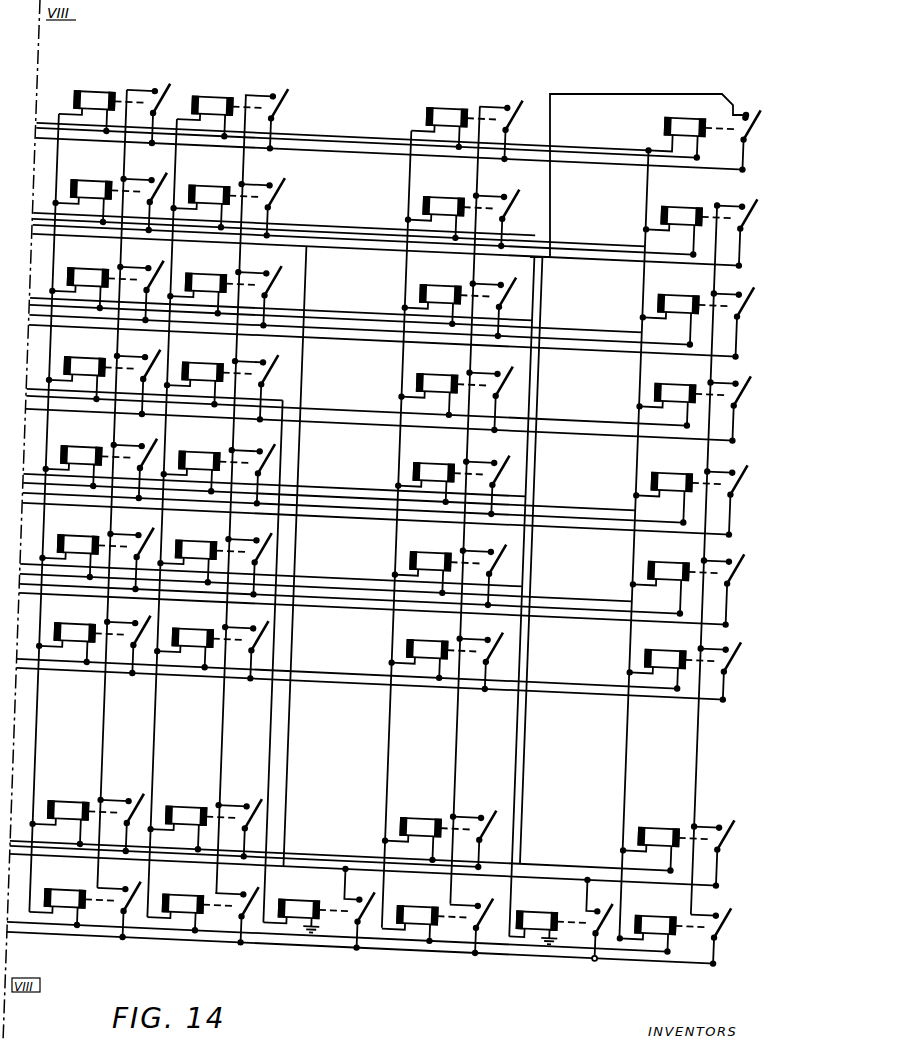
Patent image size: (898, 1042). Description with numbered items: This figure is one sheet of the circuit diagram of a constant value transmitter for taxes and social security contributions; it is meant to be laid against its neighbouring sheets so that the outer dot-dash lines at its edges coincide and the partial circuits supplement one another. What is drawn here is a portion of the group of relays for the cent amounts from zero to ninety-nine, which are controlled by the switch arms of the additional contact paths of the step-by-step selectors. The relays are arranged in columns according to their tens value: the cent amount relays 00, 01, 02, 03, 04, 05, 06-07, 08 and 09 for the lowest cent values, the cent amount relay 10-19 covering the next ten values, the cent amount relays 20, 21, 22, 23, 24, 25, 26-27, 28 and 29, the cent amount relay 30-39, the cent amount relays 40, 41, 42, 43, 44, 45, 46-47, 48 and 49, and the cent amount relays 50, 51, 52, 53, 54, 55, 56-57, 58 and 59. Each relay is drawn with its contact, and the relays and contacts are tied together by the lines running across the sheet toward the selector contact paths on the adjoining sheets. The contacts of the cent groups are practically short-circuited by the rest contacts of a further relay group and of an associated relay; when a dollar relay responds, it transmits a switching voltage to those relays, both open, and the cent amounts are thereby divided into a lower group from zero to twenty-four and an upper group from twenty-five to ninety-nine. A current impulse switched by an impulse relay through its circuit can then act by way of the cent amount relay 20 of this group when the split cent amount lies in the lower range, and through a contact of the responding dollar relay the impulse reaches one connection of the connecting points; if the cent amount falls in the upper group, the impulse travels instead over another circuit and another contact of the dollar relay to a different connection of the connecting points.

The cent amount relay 00 is at (686, 138).
The cent amount relay 01 is at (700, 226).
The cent amount relay 02 is at (696, 316).
The cent amount relay 03 is at (693, 402).
The cent amount relay 04 is at (690, 494).
The cent amount relay 05 is at (686, 583).
The cent amount relay 06-07 is at (683, 665).
The cent amount relay 08 is at (677, 847).
The cent amount relay 09 is at (674, 930).
The cent amount relay 10-19 is at (560, 925).
The cent amount relay 20 is at (466, 124).
The cent amount relay 21 is at (462, 212).
The cent amount relay 22 is at (459, 301).
The cent amount relay 23 is at (455, 393).
The cent amount relay 24 is at (452, 479).
The cent amount relay 25 is at (449, 569).
The cent amount relay 26-27 is at (445, 655).
The cent amount relay 28 is at (439, 833).
The cent amount relay 29 is at (437, 920).
The cent amount relay 30-39 is at (319, 914).
The cent amount relay 40 is at (232, 113).
The cent amount relay 41 is at (227, 201).
The cent amount relay 42 is at (224, 290).
The cent amount relay 43 is at (221, 381).
The cent amount relay 44 is at (217, 468).
The cent amount relay 45 is at (214, 558).
The cent amount relay 46-47 is at (211, 644).
The cent amount relay 48 is at (204, 822).
The cent amount relay 49 is at (203, 909).
The cent amount relay 50 is at (114, 108).
The cent amount relay 51 is at (109, 196).
The cent amount relay 52 is at (106, 285).
The cent amount relay 53 is at (103, 376).
The cent amount relay 54 is at (99, 463).
The cent amount relay 55 is at (96, 553).
The cent amount relay 56-57 is at (93, 639).
The cent amount relay 58 is at (86, 817).
The cent amount relay 59 is at (85, 904).